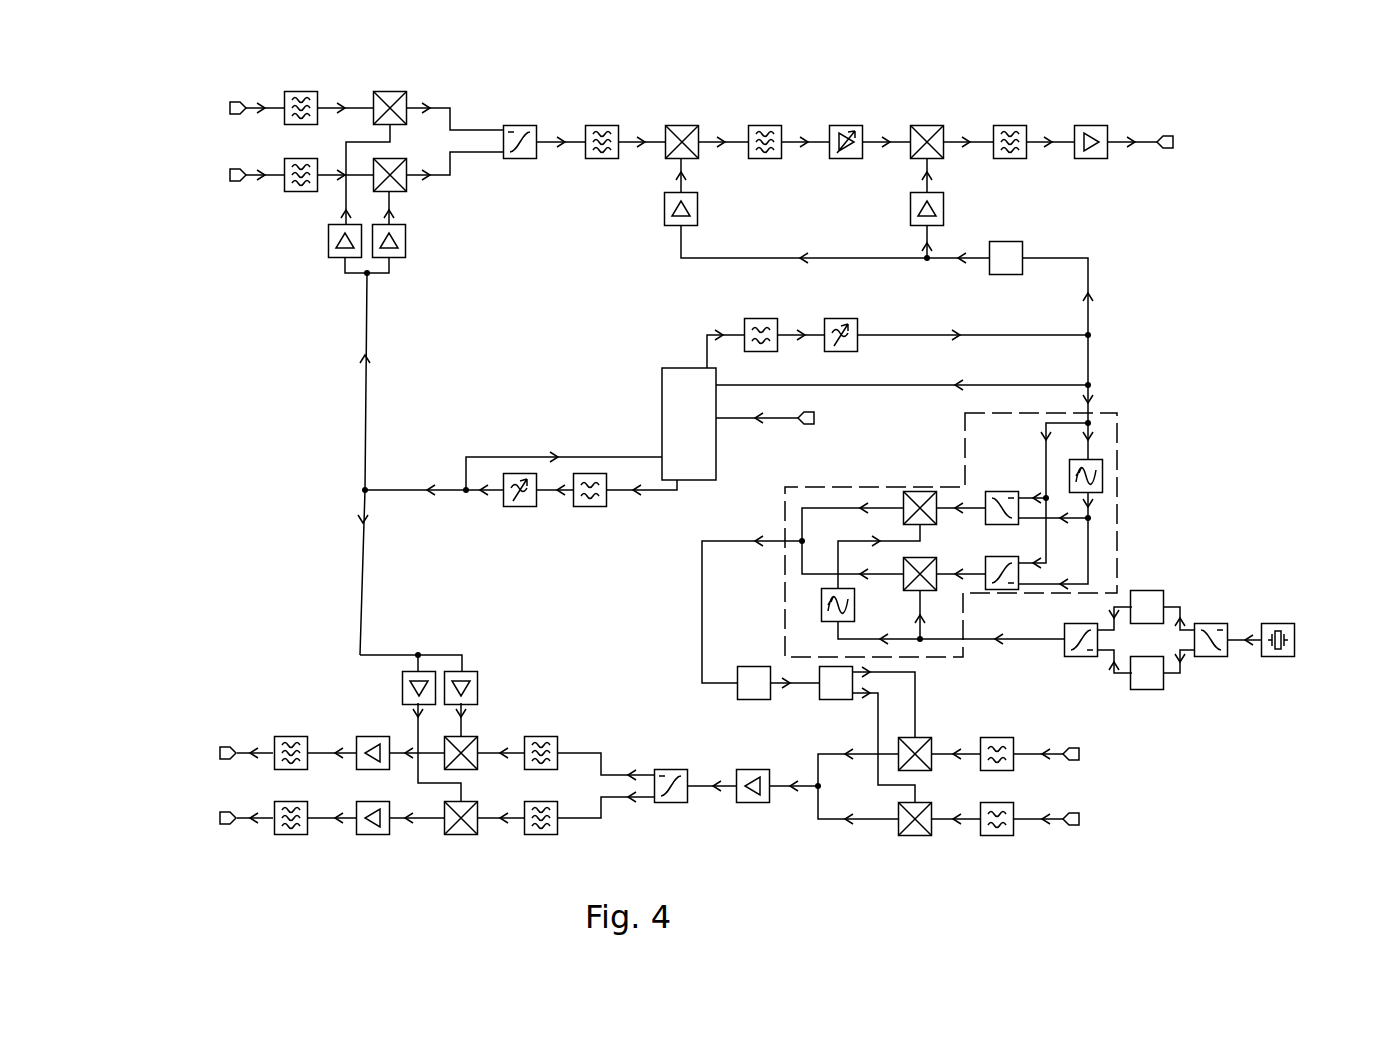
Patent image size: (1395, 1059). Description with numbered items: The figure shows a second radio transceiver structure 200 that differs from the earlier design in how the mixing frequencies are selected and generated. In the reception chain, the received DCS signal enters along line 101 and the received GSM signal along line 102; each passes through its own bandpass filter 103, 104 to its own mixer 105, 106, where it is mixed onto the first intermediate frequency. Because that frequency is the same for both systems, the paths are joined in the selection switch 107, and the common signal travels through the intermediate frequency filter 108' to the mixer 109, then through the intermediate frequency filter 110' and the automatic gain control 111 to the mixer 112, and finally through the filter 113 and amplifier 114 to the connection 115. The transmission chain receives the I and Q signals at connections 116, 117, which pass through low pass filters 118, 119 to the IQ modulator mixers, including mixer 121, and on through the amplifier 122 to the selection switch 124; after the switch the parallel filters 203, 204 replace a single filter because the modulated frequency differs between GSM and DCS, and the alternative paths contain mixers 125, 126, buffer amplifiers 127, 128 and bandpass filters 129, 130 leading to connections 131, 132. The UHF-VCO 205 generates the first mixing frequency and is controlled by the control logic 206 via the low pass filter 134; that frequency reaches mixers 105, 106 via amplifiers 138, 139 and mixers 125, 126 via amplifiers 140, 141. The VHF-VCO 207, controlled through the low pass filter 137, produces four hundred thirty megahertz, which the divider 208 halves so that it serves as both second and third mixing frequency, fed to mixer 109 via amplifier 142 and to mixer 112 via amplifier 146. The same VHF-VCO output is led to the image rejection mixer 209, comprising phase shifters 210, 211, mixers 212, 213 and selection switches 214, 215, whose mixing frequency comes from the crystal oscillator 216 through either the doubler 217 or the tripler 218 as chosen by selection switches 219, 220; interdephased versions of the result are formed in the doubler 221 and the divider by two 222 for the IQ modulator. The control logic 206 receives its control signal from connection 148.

The line for received DCS signal 101 is at (232, 102).
The line for received GSM signal 102 is at (232, 181).
The bandpass filter 103 is at (300, 92).
The bandpass filter 104 is at (300, 192).
The mixer 105 is at (390, 92).
The mixer 106 is at (406, 185).
The selection switch 107 is at (520, 125).
The intermediate frequency filter 108' is at (606, 100).
The mixer 109 is at (682, 126).
The intermediate frequency filter 110' is at (769, 100).
The automatic gain control 111 is at (846, 126).
The mixer 112 is at (927, 126).
The filter 113 is at (1010, 126).
The amplifier 114 is at (1091, 126).
The connection 115 is at (1170, 137).
The I connection 116 is at (1071, 748).
The Q connection 117 is at (1071, 826).
The low pass filter 118 is at (998, 738).
The low pass filter 119 is at (998, 835).
The mixer 121 is at (913, 835).
The amplifier 122 is at (752, 802).
The selection switch 124 is at (672, 802).
The mixer 125 is at (470, 737).
The mixer 126 is at (472, 834).
The buffer amplifier 127 is at (372, 737).
The buffer amplifier 128 is at (380, 835).
The bandpass filter 129 is at (295, 737).
The bandpass filter 130 is at (300, 835).
The connection 131 is at (230, 746).
The connection 132 is at (226, 826).
The low pass filter 134 is at (591, 507).
The low pass filter 137 is at (761, 318).
The amplifier 138 is at (328, 250).
The amplifier 139 is at (405, 250).
The amplifier 140 is at (470, 672).
The amplifier 141 is at (408, 672).
The amplifier 142 is at (665, 218).
The amplifier 146 is at (943, 218).
The connection 148 is at (810, 425).
The radio transceiver structure 200 is at (242, 435).
The parallel filter 203 is at (558, 742).
The parallel filter 204 is at (552, 834).
The UHF-VCO 205 is at (521, 507).
The control logic 206 is at (716, 468).
The VHF-VCO 207 is at (841, 318).
The divider 208 is at (1022, 250).
The image rejection mixer 209 is at (1117, 436).
The phase shifter 210 is at (1102, 478).
The phase shifter 211 is at (822, 612).
The mixer 212 is at (920, 492).
The mixer 213 is at (903, 578).
The selection switch 214 is at (1002, 492).
The selection switch 215 is at (1002, 590).
The crystal oscillator 216 is at (1295, 645).
The doubler 217 is at (1147, 591).
The tripler 218 is at (1147, 689).
The selection switch 219 is at (1211, 624).
The selection switch 220 is at (1065, 648).
The doubler 221 is at (754, 700).
The divider by two 222 is at (836, 700).